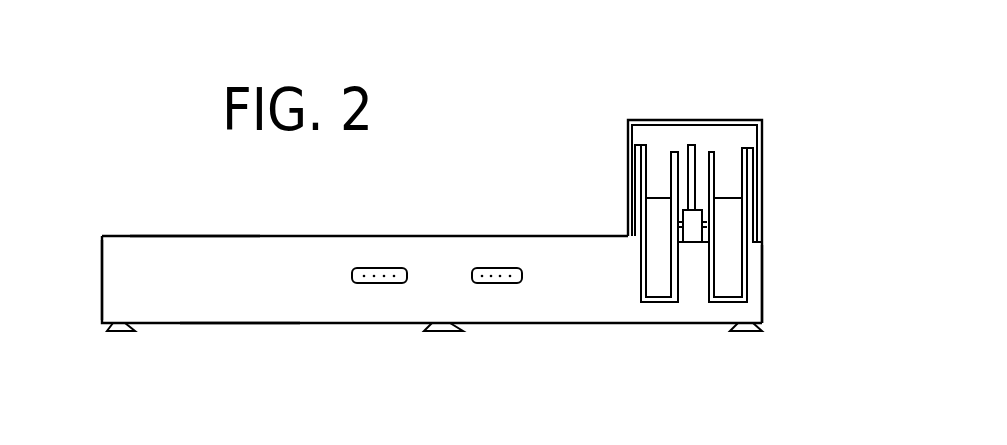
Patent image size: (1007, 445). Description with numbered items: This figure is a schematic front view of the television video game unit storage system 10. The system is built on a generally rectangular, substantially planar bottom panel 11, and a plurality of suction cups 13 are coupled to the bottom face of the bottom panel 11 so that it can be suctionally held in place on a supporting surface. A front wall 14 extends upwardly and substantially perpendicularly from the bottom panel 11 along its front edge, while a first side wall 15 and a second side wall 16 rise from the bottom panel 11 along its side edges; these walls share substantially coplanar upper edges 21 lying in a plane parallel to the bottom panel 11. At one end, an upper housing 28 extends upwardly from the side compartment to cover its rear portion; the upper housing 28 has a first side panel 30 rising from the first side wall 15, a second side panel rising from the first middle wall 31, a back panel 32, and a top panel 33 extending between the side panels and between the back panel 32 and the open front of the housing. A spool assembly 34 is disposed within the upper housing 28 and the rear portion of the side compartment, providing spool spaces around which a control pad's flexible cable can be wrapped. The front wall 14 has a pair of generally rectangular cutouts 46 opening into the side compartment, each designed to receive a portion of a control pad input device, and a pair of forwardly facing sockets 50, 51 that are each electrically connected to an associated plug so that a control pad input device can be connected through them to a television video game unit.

The television video game unit storage system 10 is at (117, 201).
The bottom panel 11 is at (287, 325).
The suction cups 13 is at (116, 332).
The front wall 14 is at (223, 312).
The first side wall 15 is at (763, 288).
The second side wall 16 is at (103, 288).
The upper edges 21 is at (167, 236).
The upper housing 28 is at (677, 220).
The first side panel 30 is at (762, 155).
The first middle wall 31 is at (627, 142).
The back panel 32 is at (652, 137).
The top panel 33 is at (638, 122).
The spool assembly 34 is at (722, 133).
The cutouts 46 is at (728, 303).
The socket 50 is at (362, 267).
The socket 51 is at (477, 267).